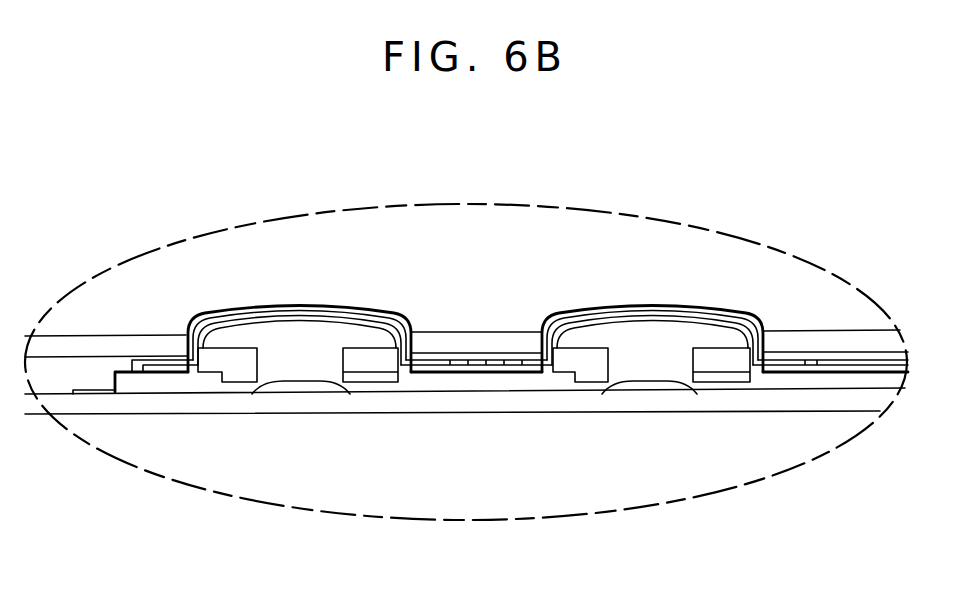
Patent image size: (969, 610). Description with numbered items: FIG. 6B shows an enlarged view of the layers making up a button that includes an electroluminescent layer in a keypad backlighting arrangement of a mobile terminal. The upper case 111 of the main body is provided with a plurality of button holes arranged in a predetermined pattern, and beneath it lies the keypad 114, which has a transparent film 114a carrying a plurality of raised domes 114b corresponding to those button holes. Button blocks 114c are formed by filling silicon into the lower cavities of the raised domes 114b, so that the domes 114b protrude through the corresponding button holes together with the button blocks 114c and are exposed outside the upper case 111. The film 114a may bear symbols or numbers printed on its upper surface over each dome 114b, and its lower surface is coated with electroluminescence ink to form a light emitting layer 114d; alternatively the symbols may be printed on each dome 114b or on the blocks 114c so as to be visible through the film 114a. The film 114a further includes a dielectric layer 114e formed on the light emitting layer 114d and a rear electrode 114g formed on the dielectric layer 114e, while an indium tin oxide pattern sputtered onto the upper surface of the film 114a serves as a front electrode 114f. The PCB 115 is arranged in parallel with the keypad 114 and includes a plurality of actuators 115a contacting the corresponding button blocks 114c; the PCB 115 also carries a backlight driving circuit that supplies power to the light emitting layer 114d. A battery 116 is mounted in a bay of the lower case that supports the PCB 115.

The upper case 111 is at (112, 347).
The keypad 114 is at (649, 360).
The transparent film 114a is at (622, 303).
The raised domes 114b is at (540, 312).
The button blocks 114c is at (308, 348).
The light emitting layer 114d is at (643, 330).
The dielectric layer 114e is at (753, 313).
The front electrode 114f is at (735, 307).
The rear electrode 114g is at (703, 330).
The PCB 115 is at (417, 413).
The actuators 115a is at (302, 388).
The battery 116 is at (127, 380).